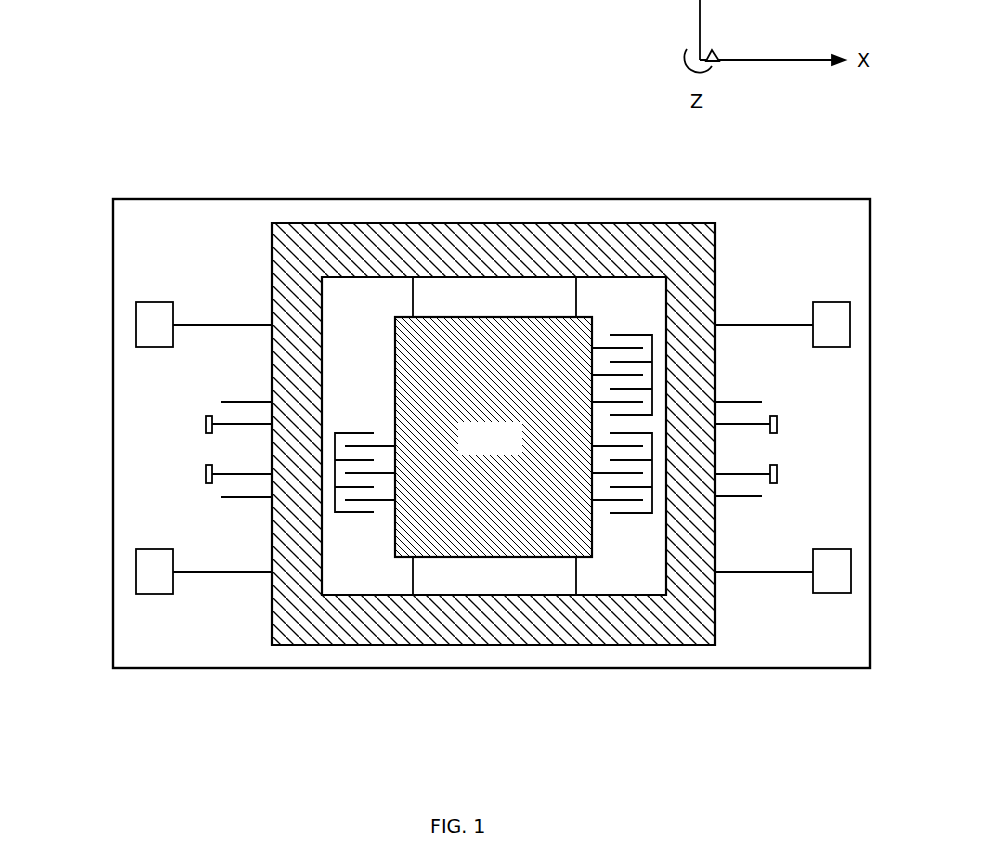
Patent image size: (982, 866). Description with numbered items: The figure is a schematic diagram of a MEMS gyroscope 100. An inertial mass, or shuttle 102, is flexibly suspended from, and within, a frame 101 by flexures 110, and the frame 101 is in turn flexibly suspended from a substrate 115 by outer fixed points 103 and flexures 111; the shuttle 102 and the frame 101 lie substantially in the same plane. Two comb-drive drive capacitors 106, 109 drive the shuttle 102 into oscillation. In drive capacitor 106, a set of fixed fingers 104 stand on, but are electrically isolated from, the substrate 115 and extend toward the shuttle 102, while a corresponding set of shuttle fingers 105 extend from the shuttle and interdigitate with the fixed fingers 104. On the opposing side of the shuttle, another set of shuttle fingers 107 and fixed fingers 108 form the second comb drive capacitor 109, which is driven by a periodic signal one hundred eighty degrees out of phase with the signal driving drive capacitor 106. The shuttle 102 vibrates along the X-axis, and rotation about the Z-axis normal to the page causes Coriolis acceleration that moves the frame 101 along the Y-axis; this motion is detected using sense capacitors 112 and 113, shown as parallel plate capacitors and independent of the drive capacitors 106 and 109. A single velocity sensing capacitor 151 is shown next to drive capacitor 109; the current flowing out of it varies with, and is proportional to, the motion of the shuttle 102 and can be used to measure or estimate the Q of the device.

The gyroscope 100 is at (323, 75).
The frame 101 is at (300, 285).
The inertial mass (shuttle) 102 is at (493, 437).
The outer fixed points 103 is at (143, 327).
The fixed fingers 104 is at (358, 522).
The shuttle fingers 105 is at (380, 505).
The comb-drive drive capacitor 106 is at (335, 597).
The shuttle fingers 107 is at (602, 510).
The fixed fingers 108 is at (633, 517).
The comb drive capacitor 109 is at (646, 592).
The flexures 110 is at (565, 306).
The flexures 111 is at (217, 315).
The sense capacitor 112 is at (772, 449).
The sense capacitor 113 is at (200, 443).
The substrate 115 is at (178, 272).
The velocity sensing capacitor 151 is at (621, 318).